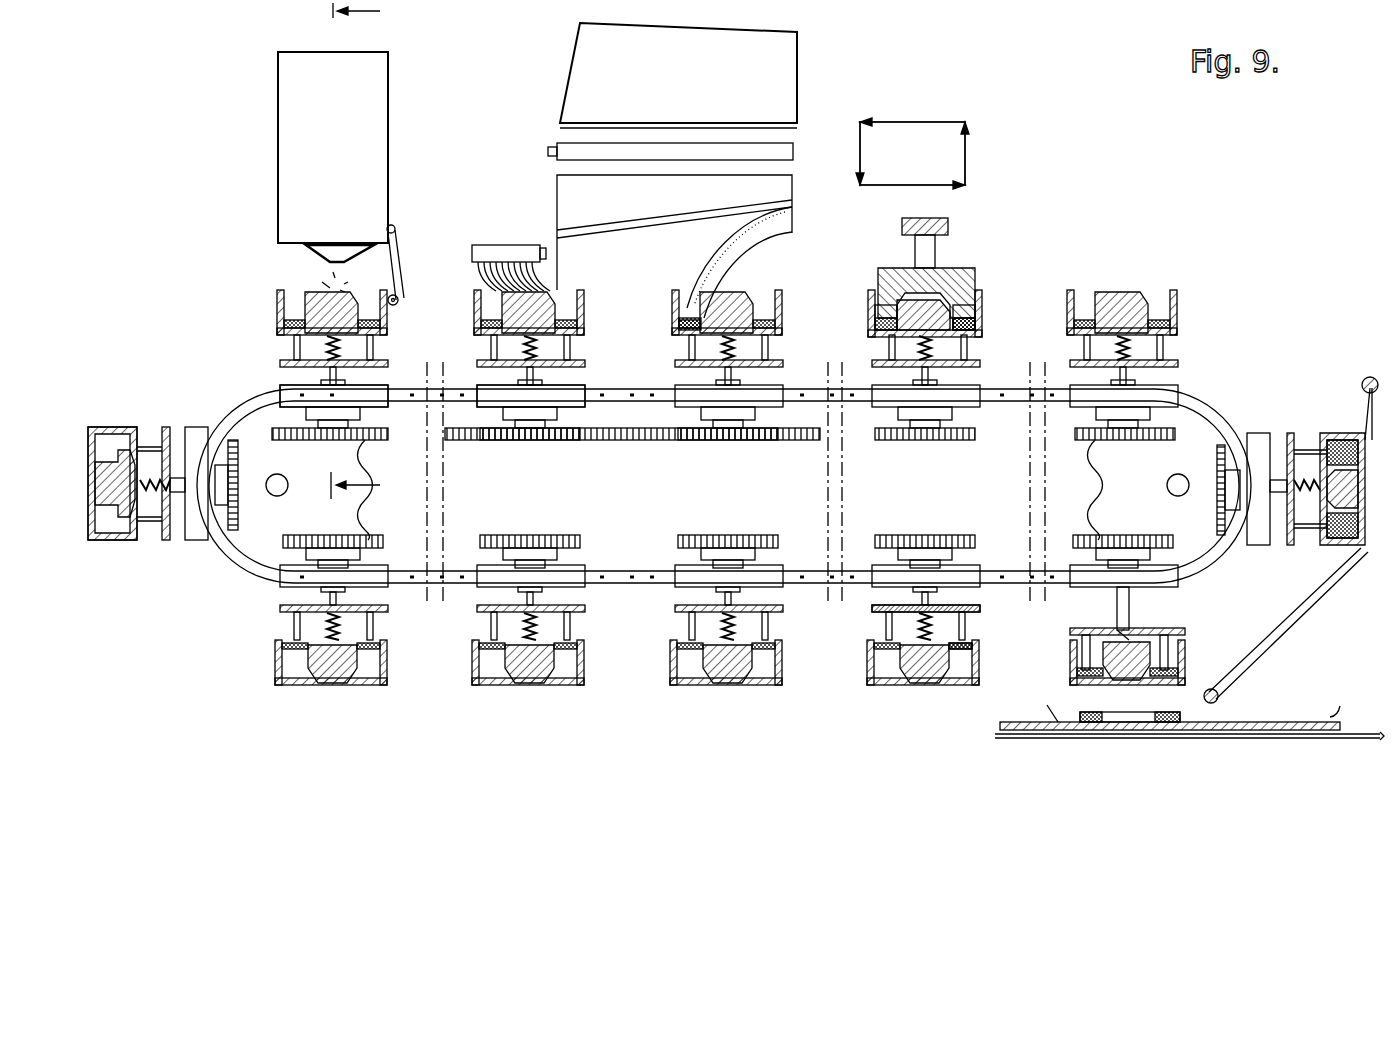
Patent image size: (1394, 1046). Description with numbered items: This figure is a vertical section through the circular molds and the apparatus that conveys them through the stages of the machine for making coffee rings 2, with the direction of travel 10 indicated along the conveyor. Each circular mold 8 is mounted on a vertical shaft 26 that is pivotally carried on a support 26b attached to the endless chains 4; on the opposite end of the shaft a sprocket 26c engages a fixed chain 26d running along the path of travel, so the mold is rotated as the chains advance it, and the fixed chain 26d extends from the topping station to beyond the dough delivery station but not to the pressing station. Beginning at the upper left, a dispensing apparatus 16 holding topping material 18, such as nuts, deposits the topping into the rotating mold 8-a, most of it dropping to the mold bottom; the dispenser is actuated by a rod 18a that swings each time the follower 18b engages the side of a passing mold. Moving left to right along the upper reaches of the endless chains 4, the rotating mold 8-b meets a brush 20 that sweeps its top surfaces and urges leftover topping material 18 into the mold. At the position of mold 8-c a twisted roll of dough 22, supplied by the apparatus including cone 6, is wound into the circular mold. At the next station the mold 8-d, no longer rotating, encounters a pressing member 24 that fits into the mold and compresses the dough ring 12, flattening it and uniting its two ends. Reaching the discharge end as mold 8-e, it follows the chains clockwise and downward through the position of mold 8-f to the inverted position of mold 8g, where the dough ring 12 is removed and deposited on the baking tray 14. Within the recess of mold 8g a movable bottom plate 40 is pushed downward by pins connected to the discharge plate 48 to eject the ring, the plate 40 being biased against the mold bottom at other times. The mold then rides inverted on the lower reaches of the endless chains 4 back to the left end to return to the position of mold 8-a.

The machine for making coffee rings 2 is at (650, 704).
The endless chains 4 is at (236, 392).
The cone 6 is at (560, 106).
The circular mold 8 is at (870, 678).
The mold at topping position 8-a is at (277, 300).
The mold at brush position 8-b is at (586, 312).
The mold at dough delivery position 8-c is at (784, 316).
The mold at pressing position 8-d is at (982, 300).
The mold at discharge end 8-e is at (1180, 316).
The mold in downward-moving position 8-f is at (1345, 430).
The inverted mold at discharge position 8g is at (1070, 660).
The direction of travel 10 is at (717, 270).
The dough ring 12 is at (982, 320).
The baking tray 14 is at (1334, 714).
The dispensing apparatus 16 is at (278, 118).
The topping material 18 is at (327, 278).
The rod 18a is at (403, 255).
The follower 18b is at (397, 306).
The brush 20 is at (505, 245).
The twisted roll of dough 22 is at (724, 256).
The pressing member 24 is at (975, 275).
The vertical shaft 26 is at (345, 383).
The support 26b is at (478, 386).
The sprocket 26c is at (322, 441).
The fixed chain 26d is at (460, 441).
The bottom plate 40 is at (966, 655).
The discharge plate 48 is at (982, 612).